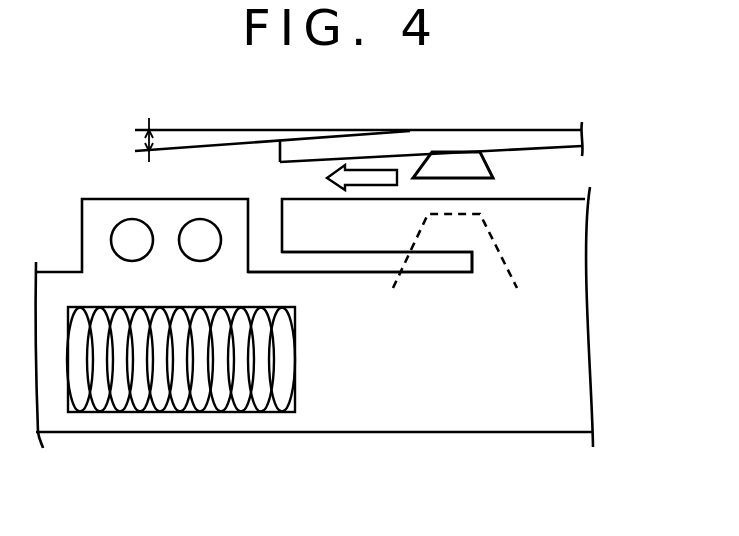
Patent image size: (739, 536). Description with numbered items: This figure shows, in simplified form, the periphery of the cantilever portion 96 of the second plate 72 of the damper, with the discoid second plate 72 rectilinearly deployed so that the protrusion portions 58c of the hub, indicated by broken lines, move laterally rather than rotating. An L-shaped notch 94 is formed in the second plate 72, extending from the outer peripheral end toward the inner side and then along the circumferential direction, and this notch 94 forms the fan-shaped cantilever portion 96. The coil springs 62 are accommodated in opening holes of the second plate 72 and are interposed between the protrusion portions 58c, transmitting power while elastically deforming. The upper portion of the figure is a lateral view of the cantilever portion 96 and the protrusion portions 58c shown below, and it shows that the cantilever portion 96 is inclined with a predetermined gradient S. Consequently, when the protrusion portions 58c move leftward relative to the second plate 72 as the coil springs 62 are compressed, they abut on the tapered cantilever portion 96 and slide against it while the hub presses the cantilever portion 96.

The second plate 72 is at (522, 137).
The cantilever portion 96 is at (301, 152).
The protrusion portions 58c is at (473, 168).
The notch 94 is at (326, 273).
The coil springs 62 is at (177, 392).
The gradient S is at (131, 140).